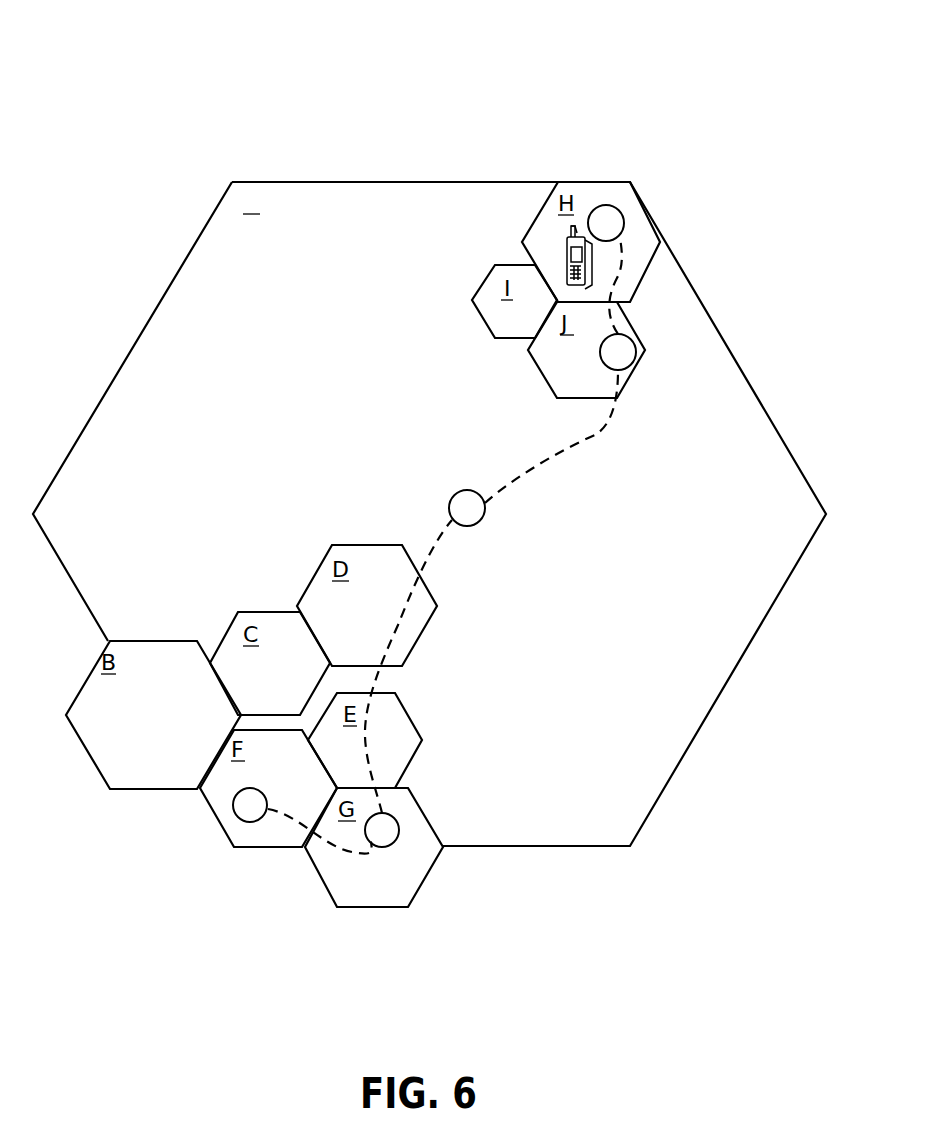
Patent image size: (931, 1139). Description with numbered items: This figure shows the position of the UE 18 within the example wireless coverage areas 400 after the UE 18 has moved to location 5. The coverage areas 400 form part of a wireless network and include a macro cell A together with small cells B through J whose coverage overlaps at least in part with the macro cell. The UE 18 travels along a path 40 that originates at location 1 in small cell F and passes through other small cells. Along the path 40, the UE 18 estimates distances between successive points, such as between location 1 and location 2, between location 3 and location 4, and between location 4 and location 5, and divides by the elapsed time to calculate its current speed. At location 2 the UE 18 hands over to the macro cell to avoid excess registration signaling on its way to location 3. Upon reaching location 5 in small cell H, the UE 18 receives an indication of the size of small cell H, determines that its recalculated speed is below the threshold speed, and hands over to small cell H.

The wireless coverage areas 400 is at (702, 48).
The UE 18 is at (567, 252).
The path 40 is at (422, 553).
The location 1 is at (250, 805).
The location 2 is at (382, 830).
The location 3 is at (467, 508).
The location 4 is at (618, 352).
The location 5 is at (606, 223).